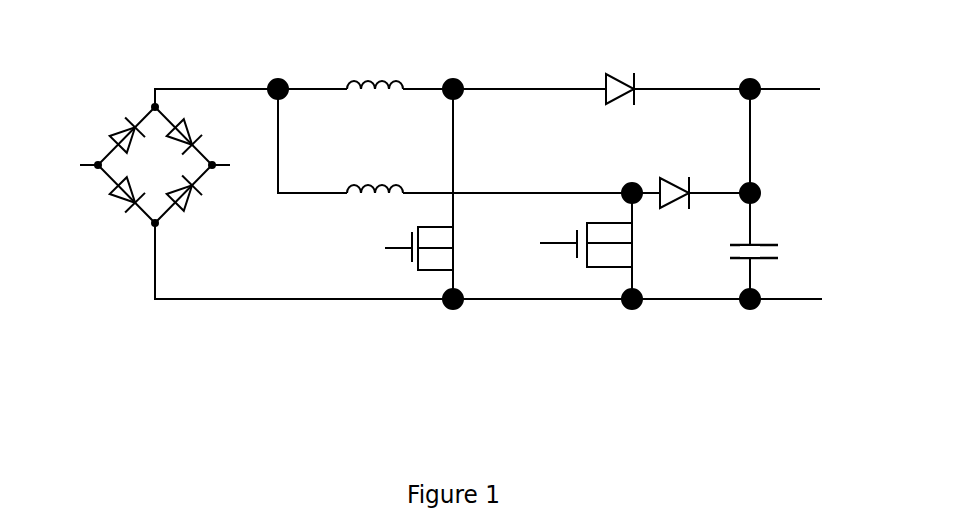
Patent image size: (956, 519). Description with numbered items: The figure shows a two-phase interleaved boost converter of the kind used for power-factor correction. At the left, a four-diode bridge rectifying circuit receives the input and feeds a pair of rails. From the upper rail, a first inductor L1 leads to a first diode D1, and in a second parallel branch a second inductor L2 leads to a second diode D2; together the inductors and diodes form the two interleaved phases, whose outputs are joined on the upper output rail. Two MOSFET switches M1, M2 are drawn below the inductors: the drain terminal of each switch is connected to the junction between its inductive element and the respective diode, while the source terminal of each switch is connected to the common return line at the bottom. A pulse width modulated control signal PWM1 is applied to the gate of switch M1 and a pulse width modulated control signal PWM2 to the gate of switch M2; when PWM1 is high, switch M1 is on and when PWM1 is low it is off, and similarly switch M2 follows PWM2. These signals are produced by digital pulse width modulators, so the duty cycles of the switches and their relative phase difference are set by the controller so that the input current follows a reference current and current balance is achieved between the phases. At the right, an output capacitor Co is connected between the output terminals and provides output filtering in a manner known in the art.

The inductor L1 is at (375, 59).
The inductor L2 is at (375, 167).
The diode D1 is at (618, 65).
The diode D2 is at (678, 174).
The capacitor Co is at (775, 238).
The MOSFET switch M1 is at (432, 287).
The MOSFET switch M2 is at (604, 285).
The pulse width modulated control signal PWM1 is at (359, 249).
The pulse width modulated control signal PWM2 is at (521, 244).